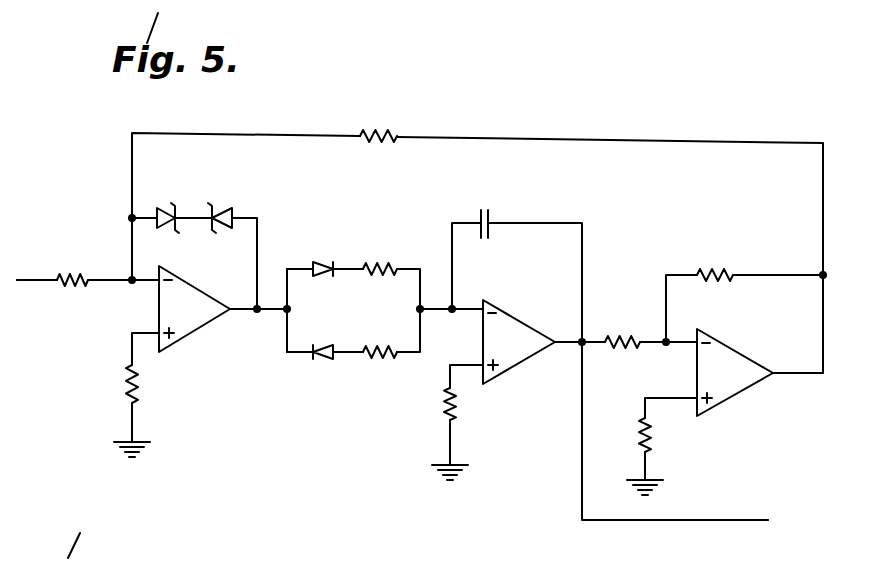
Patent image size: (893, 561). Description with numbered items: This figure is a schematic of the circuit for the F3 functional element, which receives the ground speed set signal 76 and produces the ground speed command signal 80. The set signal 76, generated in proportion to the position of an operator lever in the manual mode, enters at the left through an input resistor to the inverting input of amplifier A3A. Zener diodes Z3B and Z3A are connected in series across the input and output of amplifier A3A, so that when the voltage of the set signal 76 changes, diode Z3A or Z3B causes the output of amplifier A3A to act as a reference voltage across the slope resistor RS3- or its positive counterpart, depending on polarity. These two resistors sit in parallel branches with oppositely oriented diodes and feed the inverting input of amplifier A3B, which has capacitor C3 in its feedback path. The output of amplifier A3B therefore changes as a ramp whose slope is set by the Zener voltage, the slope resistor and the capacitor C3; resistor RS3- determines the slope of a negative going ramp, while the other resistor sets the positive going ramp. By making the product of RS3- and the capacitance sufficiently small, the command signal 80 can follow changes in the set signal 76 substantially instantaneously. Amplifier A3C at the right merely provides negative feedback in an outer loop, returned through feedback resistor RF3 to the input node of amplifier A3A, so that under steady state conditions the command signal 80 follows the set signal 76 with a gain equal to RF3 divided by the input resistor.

The feedback resistor RF3 is at (378, 125).
The Zener diode Z3B is at (166, 230).
The Zener diode Z3A is at (224, 230).
The ground speed set signal 76 is at (32, 279).
The amplifier A3A is at (208, 321).
The negative ramp slope resistor RS3- is at (381, 258).
The capacitor C3 is at (487, 212).
The amplifier A3B is at (519, 361).
The amplifier A3C is at (748, 388).
The ground speed command signal 80 is at (722, 520).